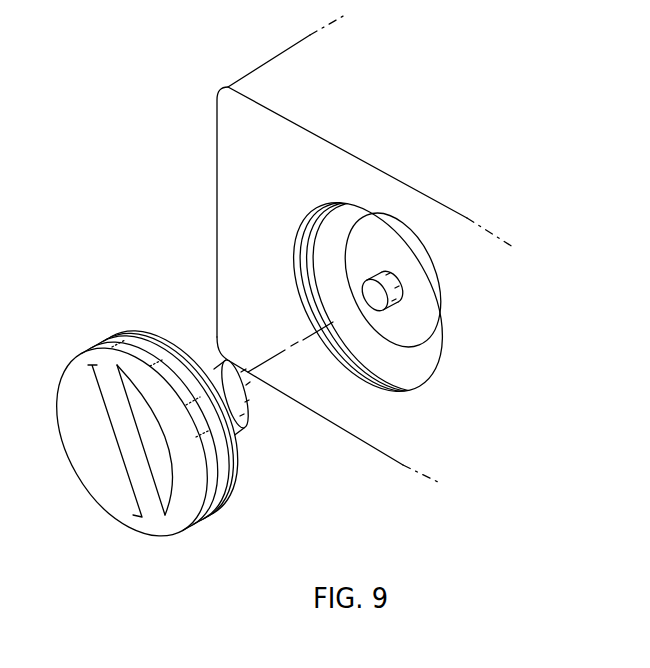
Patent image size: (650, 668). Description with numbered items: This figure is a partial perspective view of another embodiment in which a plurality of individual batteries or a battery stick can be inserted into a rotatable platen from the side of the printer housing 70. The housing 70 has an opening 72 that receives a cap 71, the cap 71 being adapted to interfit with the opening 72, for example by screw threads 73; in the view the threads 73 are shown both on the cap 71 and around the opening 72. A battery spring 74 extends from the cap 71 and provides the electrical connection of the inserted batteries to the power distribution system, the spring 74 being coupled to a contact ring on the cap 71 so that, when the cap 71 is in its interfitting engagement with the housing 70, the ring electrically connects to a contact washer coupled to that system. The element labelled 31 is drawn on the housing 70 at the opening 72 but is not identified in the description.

The printer housing 70 is at (271, 177).
The opening 72 is at (351, 342).
The screw threads 73 is at (409, 384).
The boss 31 is at (423, 325).
The battery spring 74 is at (237, 418).
The cap 71 is at (212, 498).